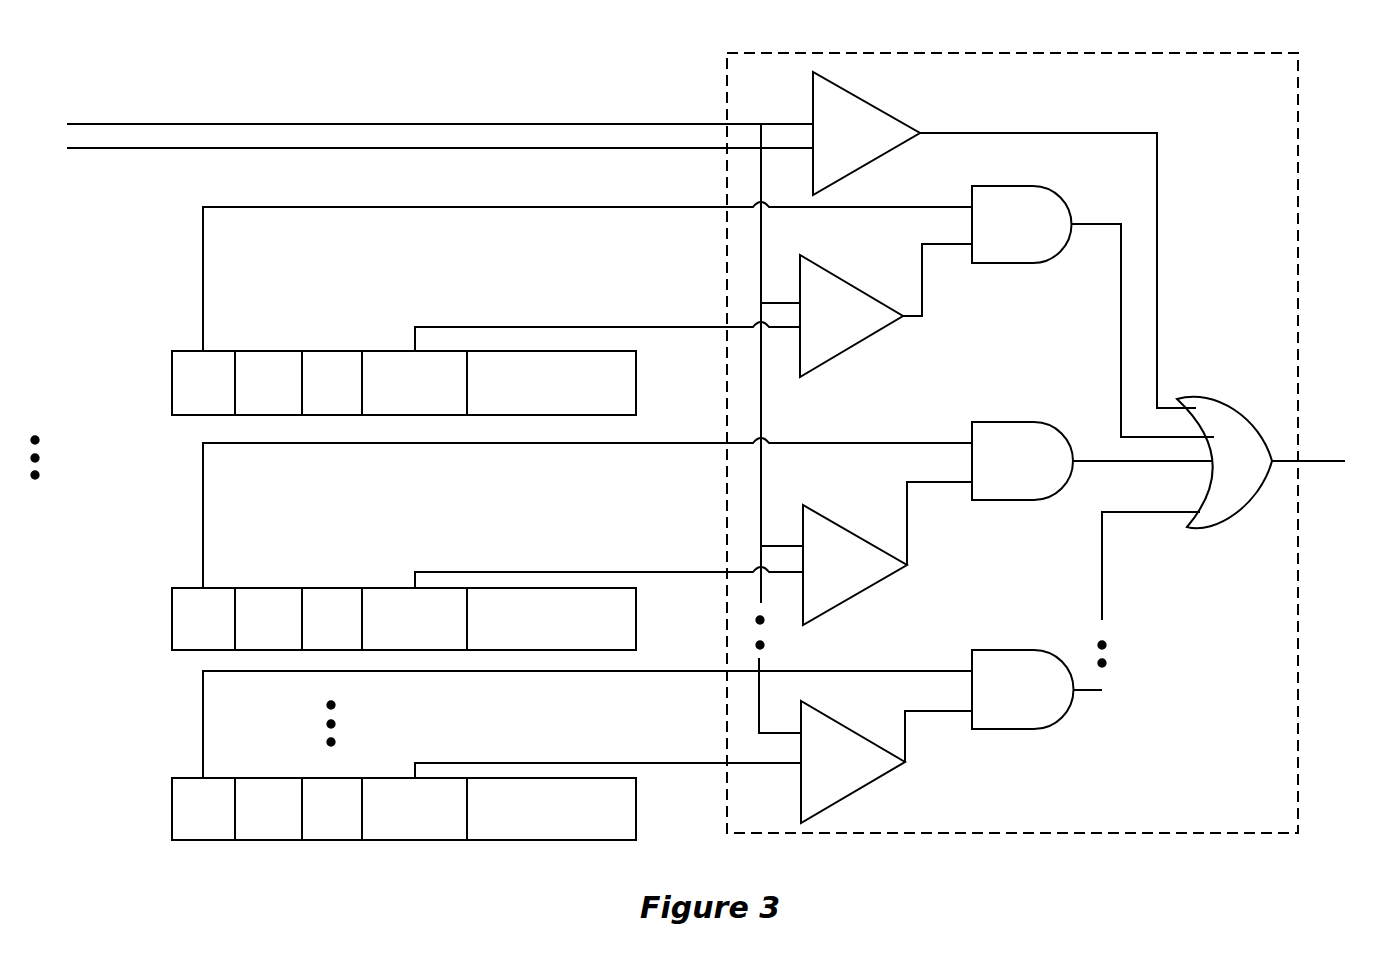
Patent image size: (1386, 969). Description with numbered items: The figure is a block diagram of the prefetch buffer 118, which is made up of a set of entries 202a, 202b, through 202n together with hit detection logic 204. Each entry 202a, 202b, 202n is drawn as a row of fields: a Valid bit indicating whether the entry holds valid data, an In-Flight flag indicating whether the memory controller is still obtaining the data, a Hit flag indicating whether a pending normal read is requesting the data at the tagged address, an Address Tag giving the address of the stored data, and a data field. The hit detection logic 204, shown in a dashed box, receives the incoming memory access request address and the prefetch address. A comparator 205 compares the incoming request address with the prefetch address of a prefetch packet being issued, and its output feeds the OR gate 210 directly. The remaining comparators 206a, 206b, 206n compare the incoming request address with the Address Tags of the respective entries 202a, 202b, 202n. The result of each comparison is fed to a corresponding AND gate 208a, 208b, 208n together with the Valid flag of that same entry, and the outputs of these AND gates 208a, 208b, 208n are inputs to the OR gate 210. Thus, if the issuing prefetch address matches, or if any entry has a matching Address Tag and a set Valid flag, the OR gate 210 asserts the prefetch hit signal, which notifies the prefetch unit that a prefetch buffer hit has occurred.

The prefetch buffer 118 is at (158, 56).
The entry 202a is at (172, 351).
The entry 202b is at (172, 588).
The entry 202n is at (172, 778).
The hit detection logic 204 is at (1254, 99).
The comparator 205 is at (869, 145).
The comparator 206a is at (860, 327).
The comparator 206b is at (863, 576).
The comparator 206n is at (862, 774).
The AND gate 208a is at (1045, 233).
The AND gate 208b is at (1045, 471).
The AND gate 208n is at (1045, 699).
The OR gate 210 is at (1240, 379).